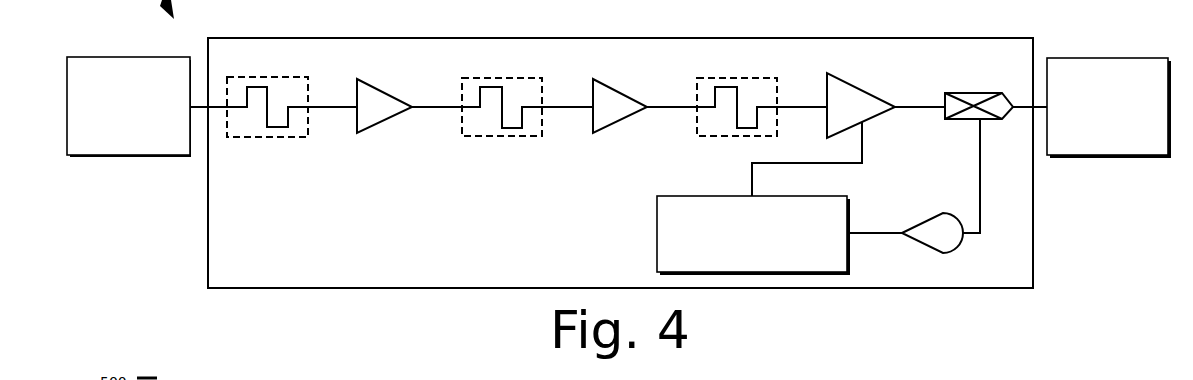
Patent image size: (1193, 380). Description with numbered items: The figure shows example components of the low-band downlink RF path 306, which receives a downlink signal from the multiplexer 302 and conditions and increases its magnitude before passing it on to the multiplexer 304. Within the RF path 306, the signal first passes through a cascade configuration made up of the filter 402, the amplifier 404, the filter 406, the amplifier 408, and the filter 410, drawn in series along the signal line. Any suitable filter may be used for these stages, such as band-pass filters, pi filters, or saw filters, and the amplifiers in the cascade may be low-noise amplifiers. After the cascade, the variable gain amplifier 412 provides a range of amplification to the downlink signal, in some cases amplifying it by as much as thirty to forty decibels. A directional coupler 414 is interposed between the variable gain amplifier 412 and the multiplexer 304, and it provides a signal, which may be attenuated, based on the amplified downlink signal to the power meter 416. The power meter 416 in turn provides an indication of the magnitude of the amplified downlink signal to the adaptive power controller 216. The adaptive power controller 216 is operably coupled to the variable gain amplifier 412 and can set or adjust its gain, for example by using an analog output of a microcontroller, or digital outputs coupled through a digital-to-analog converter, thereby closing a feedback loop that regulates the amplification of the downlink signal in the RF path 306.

The multiplexer 302 is at (117, 57).
The multiplexer 304 is at (1072, 58).
The low-band downlink RF path 306 is at (335, 38).
The filter 402 is at (288, 77).
The amplifier 404 is at (378, 85).
The filter 406 is at (527, 78).
The amplifier 408 is at (610, 85).
The filter 410 is at (758, 78).
The variable gain amplifier 412 is at (853, 83).
The directional coupler 414 is at (953, 93).
The adaptive power controller 216 is at (698, 196).
The power meter 416 is at (937, 253).